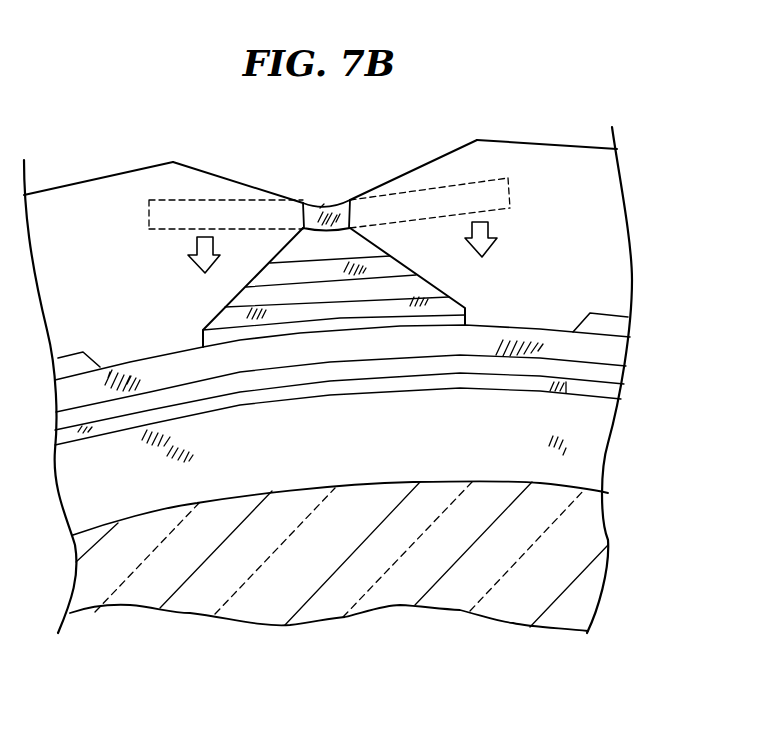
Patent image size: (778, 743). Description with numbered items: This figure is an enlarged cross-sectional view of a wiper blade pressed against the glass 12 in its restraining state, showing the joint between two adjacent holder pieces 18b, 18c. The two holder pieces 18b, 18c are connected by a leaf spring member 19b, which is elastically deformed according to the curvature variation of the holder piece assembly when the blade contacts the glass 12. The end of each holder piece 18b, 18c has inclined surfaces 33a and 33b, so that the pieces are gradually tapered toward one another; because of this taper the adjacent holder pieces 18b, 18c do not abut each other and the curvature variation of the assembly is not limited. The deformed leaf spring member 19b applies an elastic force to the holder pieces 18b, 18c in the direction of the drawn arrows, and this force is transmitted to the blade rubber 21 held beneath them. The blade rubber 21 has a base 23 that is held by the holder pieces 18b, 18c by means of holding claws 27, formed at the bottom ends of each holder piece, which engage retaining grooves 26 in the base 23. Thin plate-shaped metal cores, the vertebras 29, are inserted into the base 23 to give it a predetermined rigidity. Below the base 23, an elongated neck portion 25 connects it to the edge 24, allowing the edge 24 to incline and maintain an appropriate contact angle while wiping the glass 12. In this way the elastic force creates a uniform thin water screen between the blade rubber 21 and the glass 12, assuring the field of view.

The glass 12 is at (427, 582).
The holder piece 18b is at (78, 208).
The holder piece 18c is at (567, 158).
The leaf spring member 19b is at (332, 203).
The blade rubber 21 is at (337, 256).
The base 23 is at (283, 273).
The edge 24 is at (597, 442).
The neck portion 25 is at (607, 378).
The retaining groove 26 is at (337, 322).
The holding claw 27 is at (140, 342).
The vertebra 29 is at (385, 287).
The inclined surface 33a is at (217, 175).
The inclined surface 33b is at (240, 293).